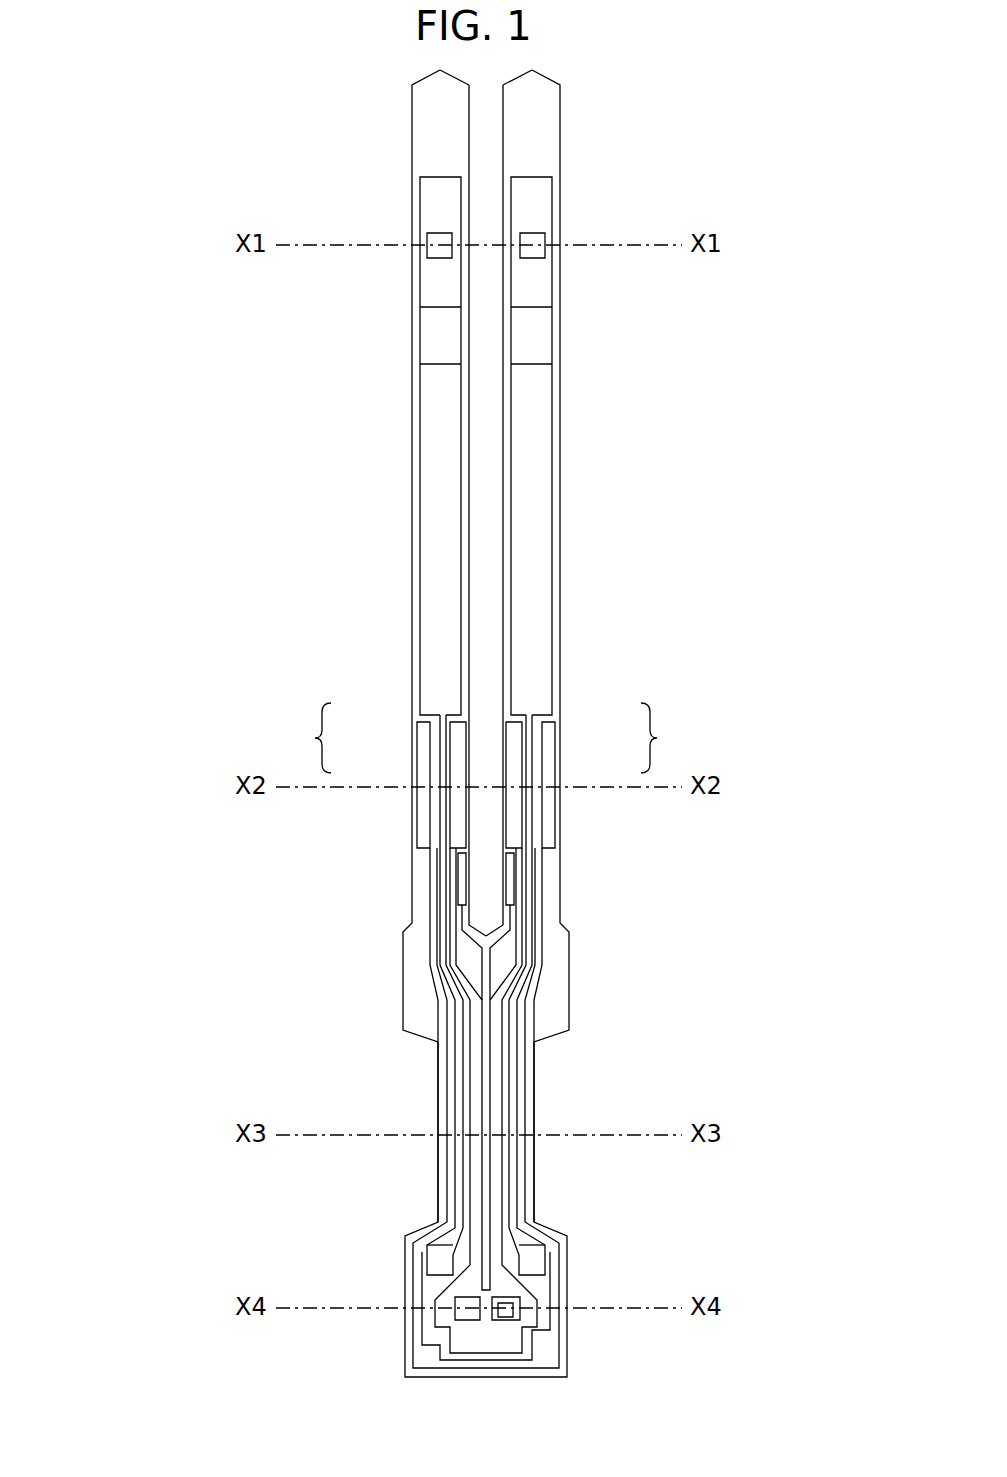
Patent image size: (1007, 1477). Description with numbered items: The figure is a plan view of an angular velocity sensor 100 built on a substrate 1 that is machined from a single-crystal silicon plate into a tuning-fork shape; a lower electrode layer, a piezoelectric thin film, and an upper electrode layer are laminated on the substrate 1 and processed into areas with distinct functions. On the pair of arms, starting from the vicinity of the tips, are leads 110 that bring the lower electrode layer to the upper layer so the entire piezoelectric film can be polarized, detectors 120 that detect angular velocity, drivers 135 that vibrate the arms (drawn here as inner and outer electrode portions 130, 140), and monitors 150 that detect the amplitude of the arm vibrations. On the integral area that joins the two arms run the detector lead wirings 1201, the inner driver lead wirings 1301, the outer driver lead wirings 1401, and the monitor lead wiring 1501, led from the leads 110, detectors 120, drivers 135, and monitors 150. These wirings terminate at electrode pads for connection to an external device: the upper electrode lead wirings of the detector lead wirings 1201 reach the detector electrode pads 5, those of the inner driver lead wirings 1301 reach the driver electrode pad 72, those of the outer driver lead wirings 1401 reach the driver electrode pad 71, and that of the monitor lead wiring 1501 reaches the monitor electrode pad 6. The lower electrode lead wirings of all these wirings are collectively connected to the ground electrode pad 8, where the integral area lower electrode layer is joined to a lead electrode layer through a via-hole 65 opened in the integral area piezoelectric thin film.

The substrate 1 is at (540, 109).
The angular velocity sensor 100 is at (207, 138).
The leads 110 is at (430, 207).
The detectors 120 is at (435, 485).
The electrode 130 is at (457, 735).
The drivers 135 is at (486, 738).
The electrode 140 is at (425, 765).
The monitors 150 is at (460, 880).
The detector lead wirings 1201 is at (460, 1118).
The inner driver lead wirings 1301 is at (475, 1083).
The outer driver lead wirings 1401 is at (447, 1188).
The monitor lead wiring 1501 is at (490, 1035).
The detector electrode pads 5 is at (437, 1262).
The monitor electrode pad 6 is at (470, 1305).
The via-hole 65 is at (520, 1308).
The ground electrode pad 8 is at (516, 1315).
The driver electrode pad 71 is at (422, 1358).
The driver electrode pad 72 is at (533, 1350).